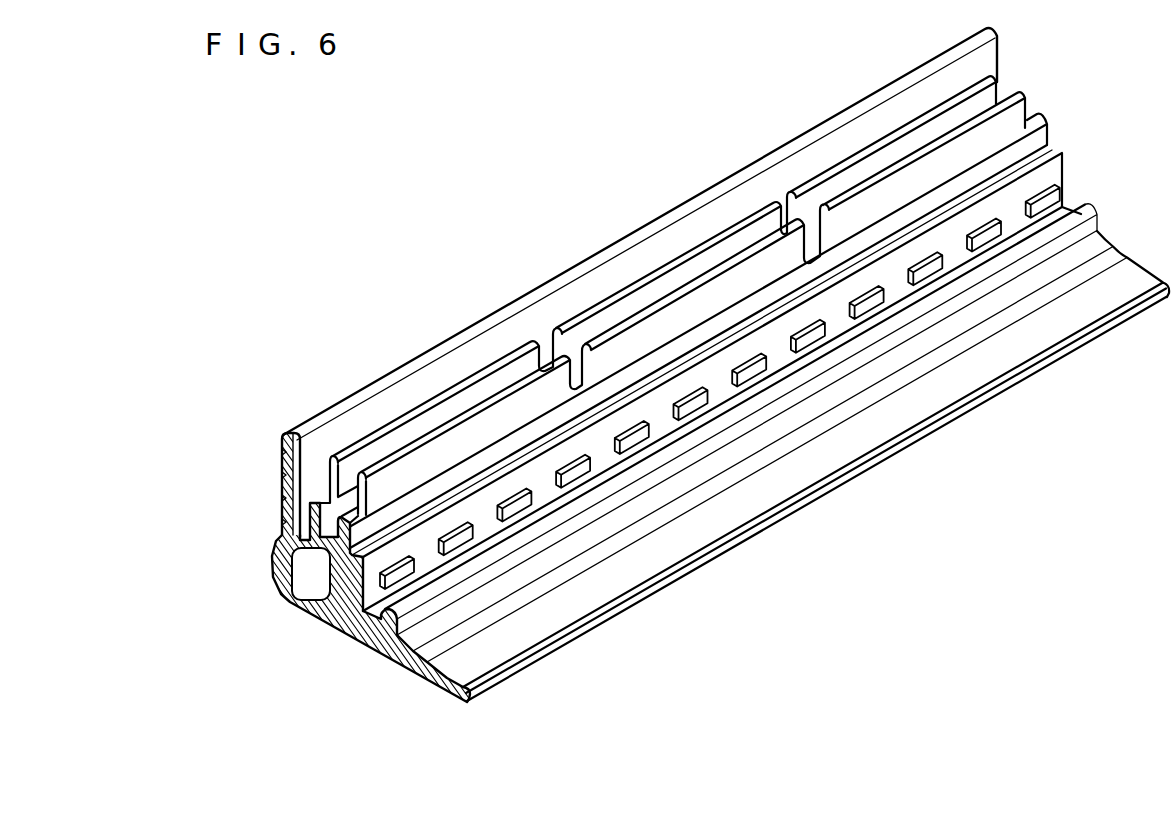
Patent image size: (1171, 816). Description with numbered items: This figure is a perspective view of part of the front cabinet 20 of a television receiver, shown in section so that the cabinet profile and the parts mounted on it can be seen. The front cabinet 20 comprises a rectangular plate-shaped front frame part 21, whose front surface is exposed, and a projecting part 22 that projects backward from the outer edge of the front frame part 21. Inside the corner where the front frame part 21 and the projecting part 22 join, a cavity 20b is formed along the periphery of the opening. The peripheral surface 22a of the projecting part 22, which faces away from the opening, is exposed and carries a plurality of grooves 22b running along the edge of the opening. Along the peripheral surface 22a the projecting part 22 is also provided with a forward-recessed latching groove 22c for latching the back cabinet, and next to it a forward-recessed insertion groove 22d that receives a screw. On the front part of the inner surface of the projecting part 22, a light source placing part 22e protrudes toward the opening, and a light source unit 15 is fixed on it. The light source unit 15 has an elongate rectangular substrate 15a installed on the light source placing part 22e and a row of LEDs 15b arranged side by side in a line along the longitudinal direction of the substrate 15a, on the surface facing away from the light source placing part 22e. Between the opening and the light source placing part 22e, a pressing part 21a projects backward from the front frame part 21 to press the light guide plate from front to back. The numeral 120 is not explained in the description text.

The light source unit 15 is at (716, 392).
The substrate 15a is at (549, 494).
The LED 15b is at (642, 452).
The front cabinet 20 is at (572, 377).
The cavity 20b is at (278, 574).
The front frame part 21 is at (572, 466).
The pressing part 21a is at (437, 593).
The projecting part 22 is at (585, 282).
The peripheral surface 22a is at (583, 262).
The grooves 22b is at (283, 455).
The latching groove 22c is at (405, 400).
The insertion groove 22d is at (455, 412).
The light source placing part 22e is at (274, 601).
The bottom plate 120 is at (583, 640).